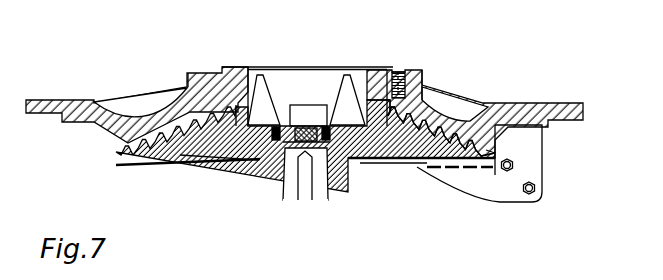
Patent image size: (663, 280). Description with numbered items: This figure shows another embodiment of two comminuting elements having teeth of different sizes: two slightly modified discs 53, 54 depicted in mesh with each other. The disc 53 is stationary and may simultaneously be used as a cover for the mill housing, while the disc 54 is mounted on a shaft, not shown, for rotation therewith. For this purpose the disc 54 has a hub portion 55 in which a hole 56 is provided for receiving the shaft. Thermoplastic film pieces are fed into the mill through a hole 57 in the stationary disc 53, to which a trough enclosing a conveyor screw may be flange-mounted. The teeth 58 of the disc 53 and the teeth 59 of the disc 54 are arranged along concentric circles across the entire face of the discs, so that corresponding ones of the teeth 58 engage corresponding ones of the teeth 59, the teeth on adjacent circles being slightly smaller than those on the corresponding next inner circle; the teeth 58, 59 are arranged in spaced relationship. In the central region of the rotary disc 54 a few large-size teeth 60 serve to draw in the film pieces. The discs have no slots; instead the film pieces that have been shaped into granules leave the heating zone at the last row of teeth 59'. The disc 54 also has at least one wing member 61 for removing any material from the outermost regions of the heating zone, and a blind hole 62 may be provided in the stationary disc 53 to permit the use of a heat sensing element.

The stationary disc 53 is at (545, 110).
The rotary disc 54 is at (449, 163).
The hub portion 55 is at (337, 185).
The hole 56 is at (315, 186).
The hole 57 is at (289, 77).
The teeth 58 is at (421, 97).
The teeth 59 is at (341, 133).
The last row of teeth 59' is at (506, 201).
The large-size teeth 60 is at (257, 72).
The wing member 61 is at (535, 158).
The blind hole 62 is at (472, 120).